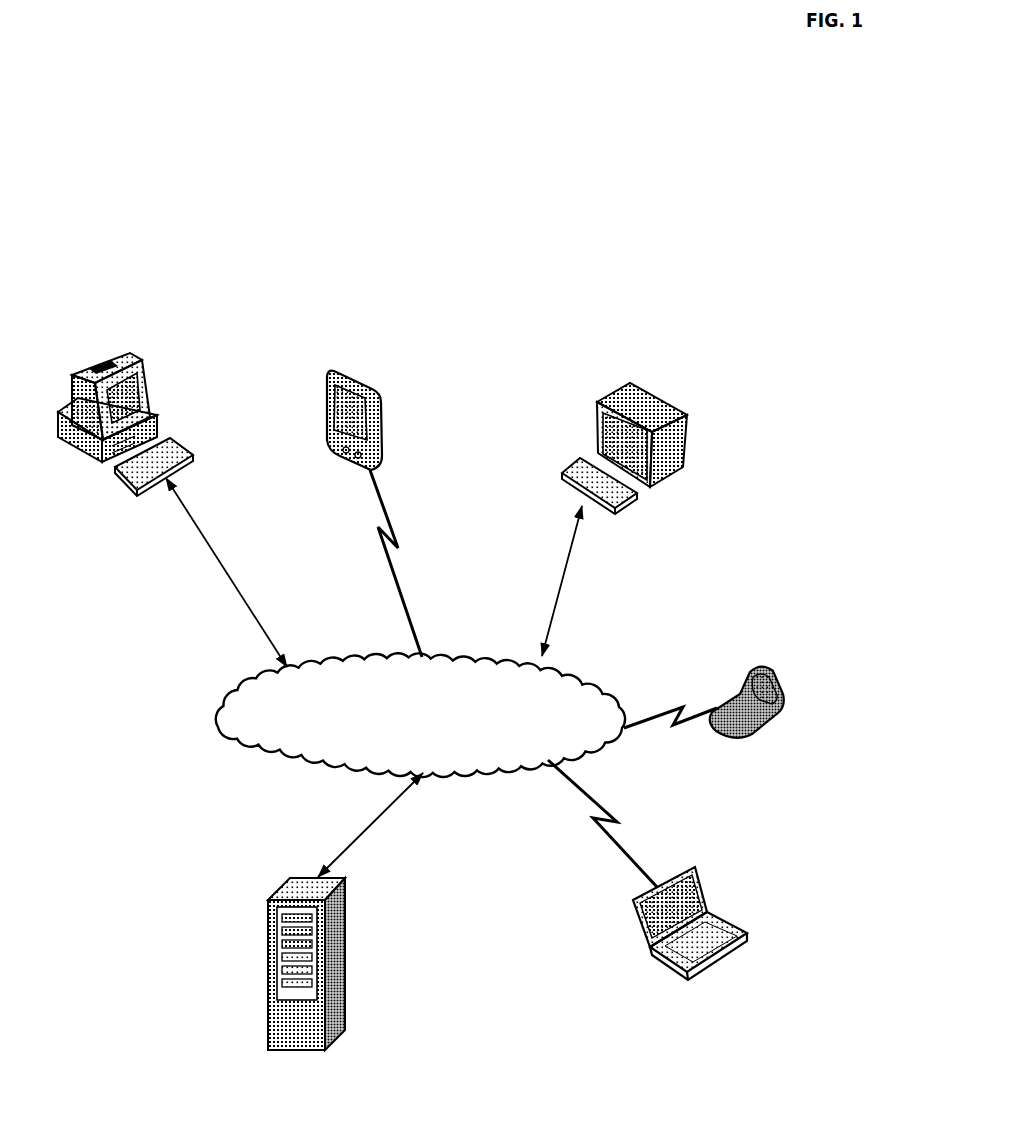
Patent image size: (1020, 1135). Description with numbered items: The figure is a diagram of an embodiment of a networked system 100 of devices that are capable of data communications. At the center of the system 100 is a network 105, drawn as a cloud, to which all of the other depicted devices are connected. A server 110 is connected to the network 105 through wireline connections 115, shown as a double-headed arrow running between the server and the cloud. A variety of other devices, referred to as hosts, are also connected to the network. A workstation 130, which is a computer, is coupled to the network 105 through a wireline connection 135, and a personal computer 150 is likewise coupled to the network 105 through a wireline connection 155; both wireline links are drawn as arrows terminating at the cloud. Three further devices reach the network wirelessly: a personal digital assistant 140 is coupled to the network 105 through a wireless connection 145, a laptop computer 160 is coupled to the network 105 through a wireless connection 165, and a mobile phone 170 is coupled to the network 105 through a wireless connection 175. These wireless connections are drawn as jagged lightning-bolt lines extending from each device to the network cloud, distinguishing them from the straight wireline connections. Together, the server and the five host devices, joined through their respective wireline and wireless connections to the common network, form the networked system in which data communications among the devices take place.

The networked system 100 is at (506, 228).
The network 105 is at (594, 686).
The server 110 is at (349, 958).
The wireline connections 115 is at (386, 813).
The workstation 130 is at (664, 394).
The wireline connection 135 is at (556, 617).
The personal digital assistant 140 is at (359, 376).
The wireless connection 145 is at (403, 585).
The personal computer 150 is at (147, 362).
The wireline connection 155 is at (231, 572).
The laptop computer 160 is at (719, 927).
The wireless connection 165 is at (607, 838).
The mobile phone 170 is at (771, 668).
The wireless connection 175 is at (651, 713).